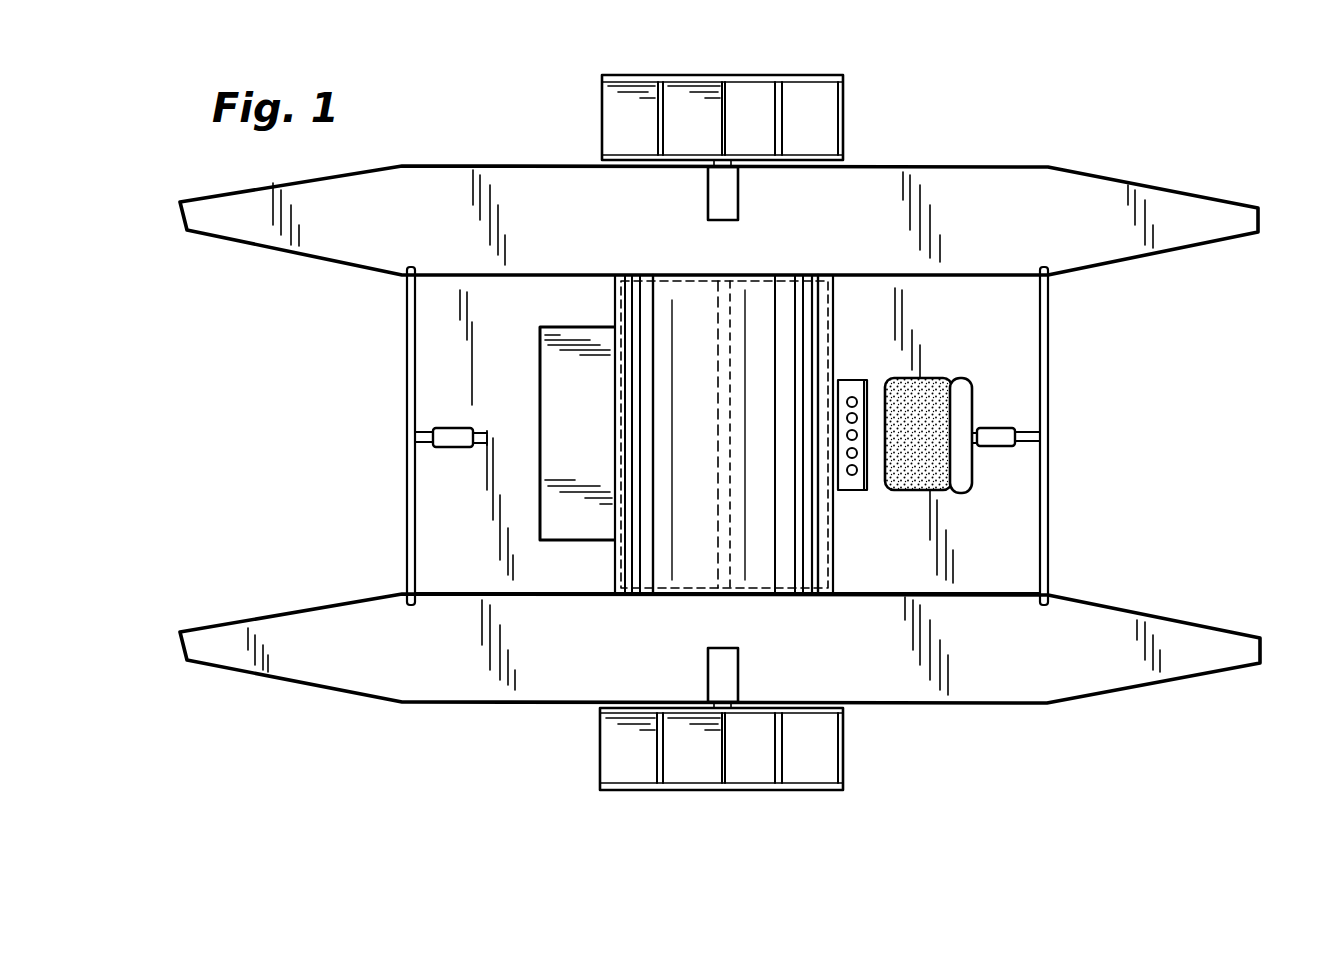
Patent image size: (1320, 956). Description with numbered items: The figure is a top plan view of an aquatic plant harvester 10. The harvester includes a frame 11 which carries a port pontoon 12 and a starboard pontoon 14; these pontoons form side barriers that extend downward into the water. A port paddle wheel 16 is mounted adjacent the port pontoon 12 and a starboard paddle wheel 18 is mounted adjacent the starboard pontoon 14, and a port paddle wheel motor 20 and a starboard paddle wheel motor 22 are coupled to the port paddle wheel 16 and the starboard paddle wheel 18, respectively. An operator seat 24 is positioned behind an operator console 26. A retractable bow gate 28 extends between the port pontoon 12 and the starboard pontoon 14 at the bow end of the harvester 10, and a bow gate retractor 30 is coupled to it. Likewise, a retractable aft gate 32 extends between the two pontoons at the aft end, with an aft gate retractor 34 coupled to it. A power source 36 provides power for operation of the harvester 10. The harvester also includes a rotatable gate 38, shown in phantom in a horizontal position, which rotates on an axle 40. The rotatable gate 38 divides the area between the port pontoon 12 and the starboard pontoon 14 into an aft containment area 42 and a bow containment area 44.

The aquatic plant harvester 10 is at (1168, 113).
The frame 11 is at (404, 500).
The port pontoon 12 is at (298, 683).
The starboard pontoon 14 is at (340, 266).
The port paddle wheel 16 is at (748, 770).
The starboard paddle wheel 18 is at (845, 88).
The port paddle wheel motor 20 is at (740, 674).
The starboard paddle wheel motor 22 is at (739, 200).
The operator seat 24 is at (973, 398).
The operator console 26 is at (848, 490).
The retractable bow gate 28 is at (407, 398).
The bow gate retractor 30 is at (465, 430).
The retractable aft gate 32 is at (1049, 310).
The aft gate retractor 34 is at (990, 447).
The power source 36 is at (598, 432).
The rotatable gate 38 is at (776, 275).
The axle 40 is at (718, 310).
The aft containment area 42 is at (970, 300).
The bow containment area 44 is at (525, 298).